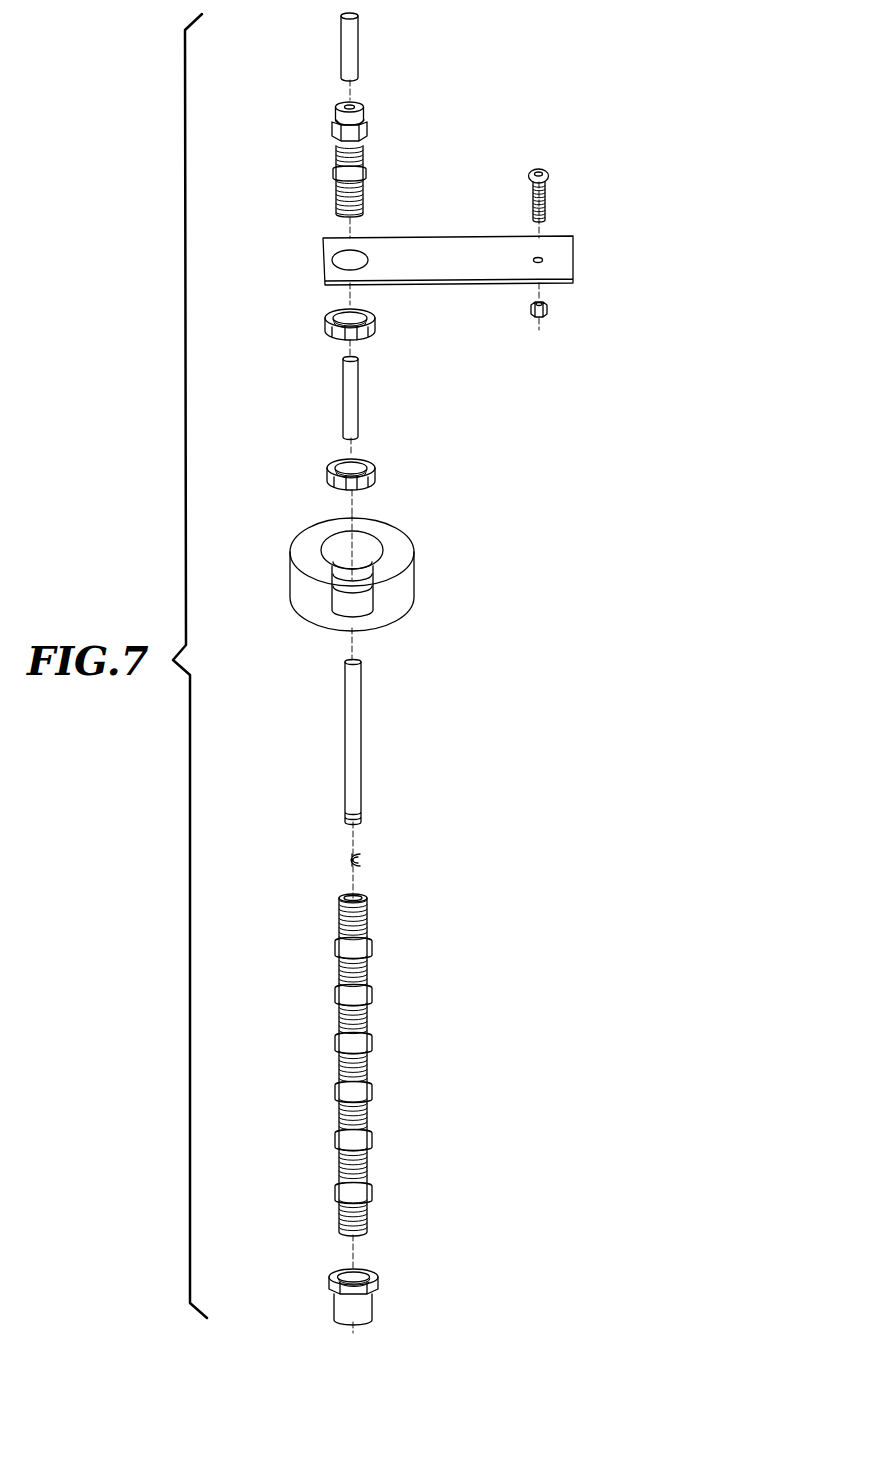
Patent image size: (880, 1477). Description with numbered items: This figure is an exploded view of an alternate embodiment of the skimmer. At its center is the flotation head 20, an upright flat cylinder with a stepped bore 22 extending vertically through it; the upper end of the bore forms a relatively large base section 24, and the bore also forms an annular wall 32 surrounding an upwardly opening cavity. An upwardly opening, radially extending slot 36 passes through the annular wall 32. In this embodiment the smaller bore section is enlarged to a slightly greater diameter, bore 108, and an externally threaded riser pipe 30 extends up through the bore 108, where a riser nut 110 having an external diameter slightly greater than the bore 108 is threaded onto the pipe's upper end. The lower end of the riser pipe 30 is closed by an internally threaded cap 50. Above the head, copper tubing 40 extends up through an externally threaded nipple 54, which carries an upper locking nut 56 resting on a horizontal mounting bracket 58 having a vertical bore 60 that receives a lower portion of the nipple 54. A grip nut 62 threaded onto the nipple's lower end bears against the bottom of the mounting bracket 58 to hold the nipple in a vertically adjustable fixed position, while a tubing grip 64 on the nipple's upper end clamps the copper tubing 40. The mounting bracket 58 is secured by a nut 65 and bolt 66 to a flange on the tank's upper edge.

The flotation head 20 is at (351, 578).
The stepped bore 22 is at (362, 545).
The base section 24 is at (343, 543).
The riser pipe 30 is at (340, 907).
The annular wall 32 is at (308, 529).
The slot 36 is at (365, 607).
The copper tubing 40 is at (358, 48).
The cap 50 is at (372, 1298).
The externally threaded nipple 54 is at (336, 208).
The upper locking nut 56 is at (366, 174).
The horizontal mounting bracket 58 is at (421, 241).
The vertical bore 60 is at (342, 261).
The grip nut 62 is at (328, 318).
The tubing grip 64 is at (357, 149).
The nut 65 is at (548, 310).
The bolt 66 is at (332, 133).
The bore 108 is at (340, 580).
The riser nut 110 is at (328, 468).